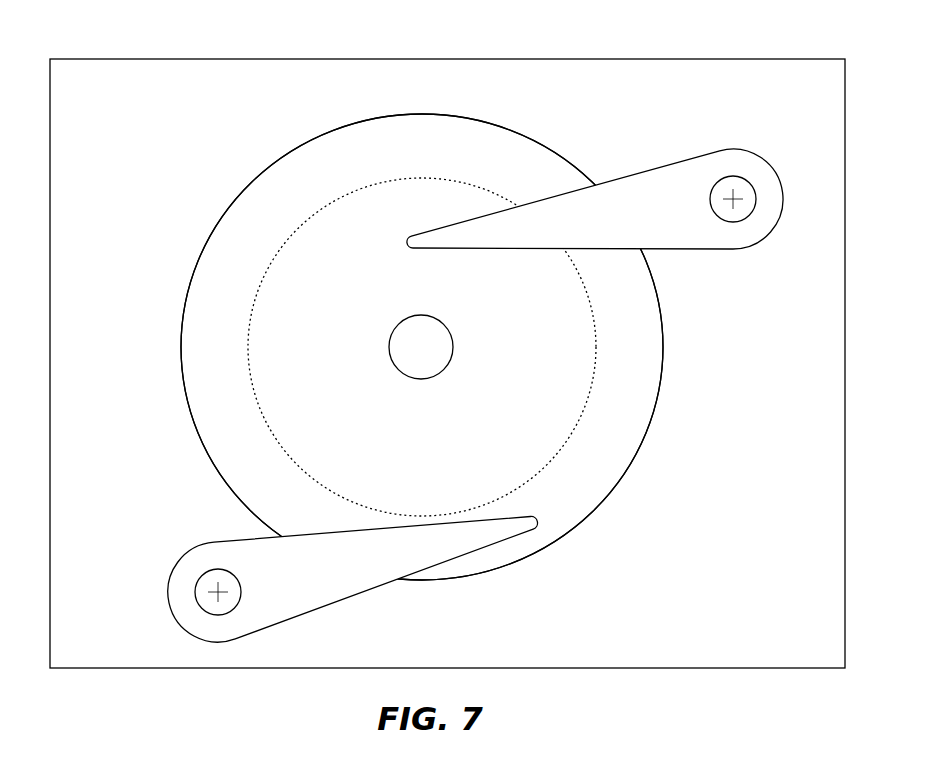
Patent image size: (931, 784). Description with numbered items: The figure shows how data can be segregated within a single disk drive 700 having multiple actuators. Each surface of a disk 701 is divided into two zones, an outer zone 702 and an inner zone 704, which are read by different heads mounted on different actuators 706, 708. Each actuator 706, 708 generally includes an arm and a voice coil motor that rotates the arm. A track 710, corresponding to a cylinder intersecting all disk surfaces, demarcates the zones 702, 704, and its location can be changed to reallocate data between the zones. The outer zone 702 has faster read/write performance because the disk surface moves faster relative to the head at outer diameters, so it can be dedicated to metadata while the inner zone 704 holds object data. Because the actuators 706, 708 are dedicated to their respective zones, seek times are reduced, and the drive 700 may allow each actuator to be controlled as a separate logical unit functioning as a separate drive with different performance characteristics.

The disk drive 700 is at (740, 74).
The disk 701 is at (555, 157).
The outer zone 702 is at (213, 355).
The inner zone 704 is at (310, 305).
The actuator 706 is at (352, 578).
The actuator 708 is at (673, 243).
The track 710 is at (280, 250).